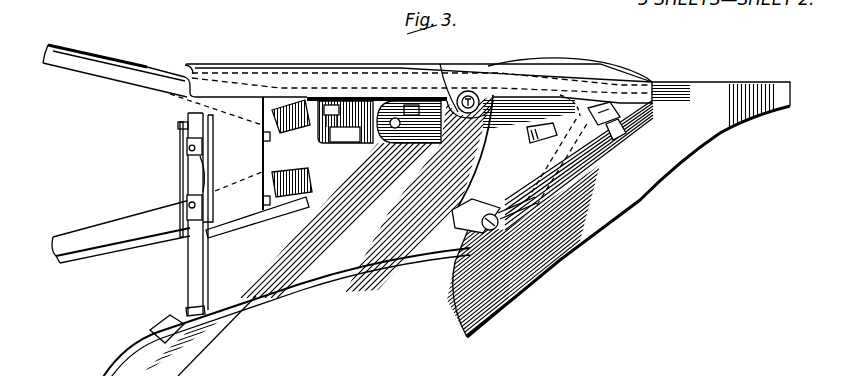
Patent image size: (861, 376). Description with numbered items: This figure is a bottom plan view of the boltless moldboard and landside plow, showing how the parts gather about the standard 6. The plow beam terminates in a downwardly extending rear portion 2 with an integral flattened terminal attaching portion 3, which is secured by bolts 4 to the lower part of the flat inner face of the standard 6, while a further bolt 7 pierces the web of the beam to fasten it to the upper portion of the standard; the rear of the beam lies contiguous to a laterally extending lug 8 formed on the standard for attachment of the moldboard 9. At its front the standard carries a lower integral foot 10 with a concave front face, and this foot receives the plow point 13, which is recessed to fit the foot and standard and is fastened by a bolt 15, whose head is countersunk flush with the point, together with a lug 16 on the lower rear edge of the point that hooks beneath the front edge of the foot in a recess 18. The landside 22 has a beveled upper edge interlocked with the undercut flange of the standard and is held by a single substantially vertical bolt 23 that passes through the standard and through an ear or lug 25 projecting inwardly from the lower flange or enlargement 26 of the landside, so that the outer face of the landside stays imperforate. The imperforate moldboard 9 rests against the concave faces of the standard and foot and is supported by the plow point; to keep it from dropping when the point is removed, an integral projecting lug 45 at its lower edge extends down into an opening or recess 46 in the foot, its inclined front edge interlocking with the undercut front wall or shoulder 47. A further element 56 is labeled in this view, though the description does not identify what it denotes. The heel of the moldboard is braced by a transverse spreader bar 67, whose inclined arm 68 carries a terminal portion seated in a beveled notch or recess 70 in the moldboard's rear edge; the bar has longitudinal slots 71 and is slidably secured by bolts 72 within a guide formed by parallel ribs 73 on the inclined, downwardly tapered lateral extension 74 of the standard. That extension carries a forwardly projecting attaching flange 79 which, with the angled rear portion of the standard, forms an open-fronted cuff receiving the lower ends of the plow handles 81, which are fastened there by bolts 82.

The downwardly extending rear portion 2 is at (333, 143).
The flattened terminal attaching portion 3 is at (350, 97).
The bolts 4 is at (332, 105).
The standard 6 is at (441, 66).
The bolt 7 is at (345, 143).
The laterally extending lug 8 is at (308, 259).
The moldboard 9 is at (332, 280).
The foot 10 is at (512, 170).
The plow point 13 is at (622, 212).
The bolt 15 is at (603, 108).
The lug 16 is at (510, 233).
The recess 18 is at (480, 204).
The landside 22 is at (163, 65).
The vertical bolt 23 is at (473, 92).
The ear or lug 25 is at (475, 128).
The lower flange or enlargement 26 is at (240, 70).
The projecting lug 45 is at (545, 130).
The opening or recess 46 is at (527, 143).
The undercut front wall or shoulder 47 is at (600, 152).
The housing 56 is at (398, 126).
The spreader bar 67 is at (195, 283).
The arm 68 is at (183, 318).
The notch or recess 70 is at (147, 337).
The longitudinal slots 71 is at (213, 174).
The bolts 72 is at (186, 152).
The parallel ribs 73 is at (180, 134).
The lateral extension 74 is at (180, 143).
The attaching flange 79 is at (297, 208).
The plow handles 81 is at (73, 67).
The bolts 82 is at (288, 134).